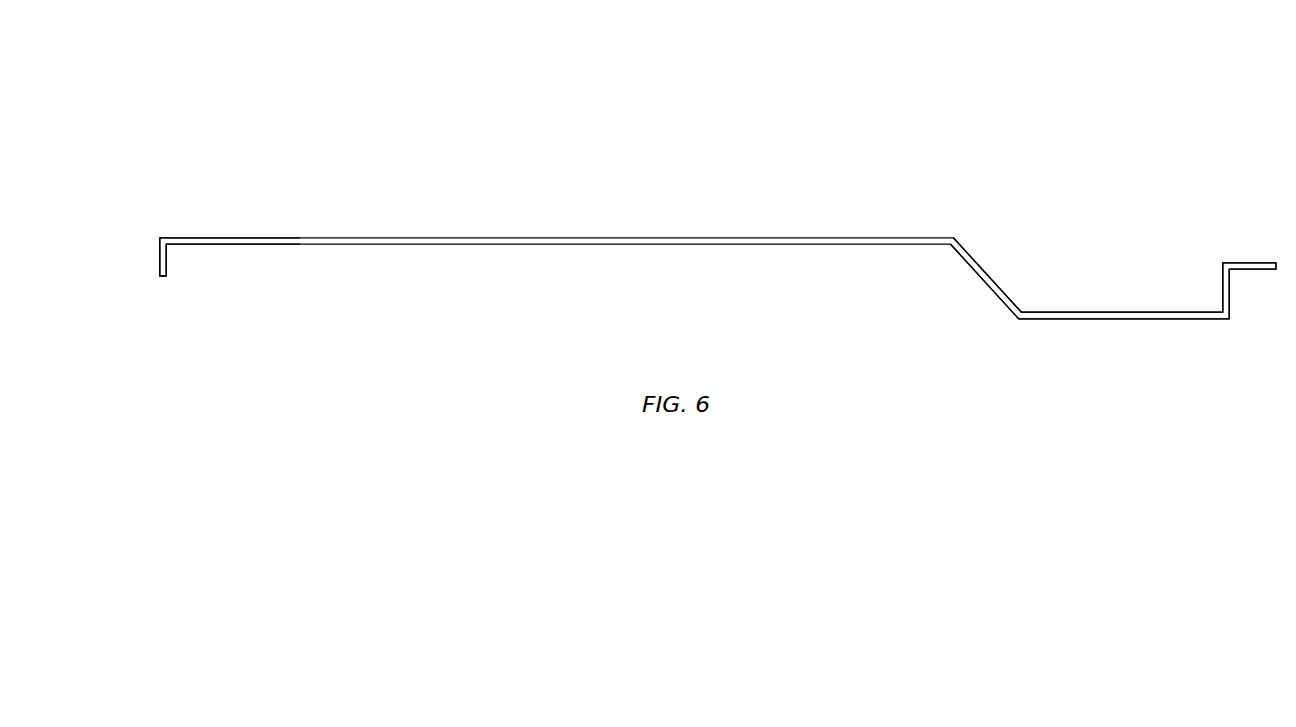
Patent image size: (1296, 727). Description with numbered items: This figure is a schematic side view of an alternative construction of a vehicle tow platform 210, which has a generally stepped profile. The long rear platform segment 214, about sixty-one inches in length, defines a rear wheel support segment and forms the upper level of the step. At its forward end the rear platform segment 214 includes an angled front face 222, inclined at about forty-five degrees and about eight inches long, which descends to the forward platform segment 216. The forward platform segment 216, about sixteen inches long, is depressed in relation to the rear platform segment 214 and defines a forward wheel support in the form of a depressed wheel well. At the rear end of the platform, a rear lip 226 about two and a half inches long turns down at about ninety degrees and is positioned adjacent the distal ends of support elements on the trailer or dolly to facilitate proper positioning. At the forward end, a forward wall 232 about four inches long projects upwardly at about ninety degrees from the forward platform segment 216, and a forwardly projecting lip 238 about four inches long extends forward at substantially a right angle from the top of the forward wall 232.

The vehicle tow platform 210 is at (846, 104).
The rear platform segment 214 is at (243, 237).
The forward platform segment 216 is at (1118, 312).
The angled front face 222 is at (985, 268).
The rear lip 226 is at (158, 252).
The forward wall 232 is at (1232, 300).
The forwardly projecting lip 238 is at (1260, 262).